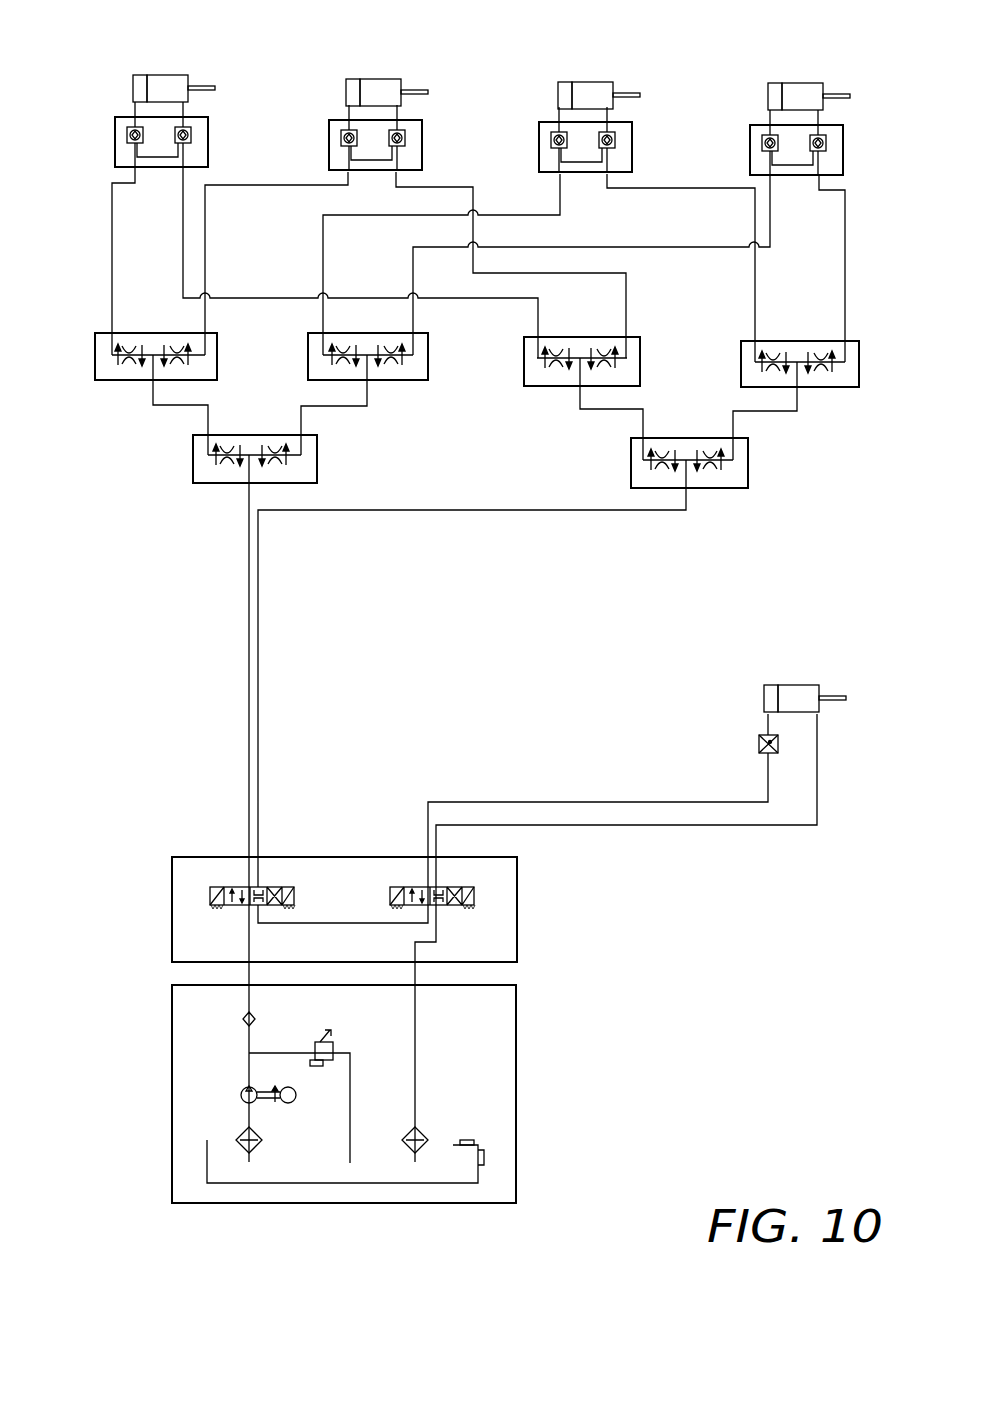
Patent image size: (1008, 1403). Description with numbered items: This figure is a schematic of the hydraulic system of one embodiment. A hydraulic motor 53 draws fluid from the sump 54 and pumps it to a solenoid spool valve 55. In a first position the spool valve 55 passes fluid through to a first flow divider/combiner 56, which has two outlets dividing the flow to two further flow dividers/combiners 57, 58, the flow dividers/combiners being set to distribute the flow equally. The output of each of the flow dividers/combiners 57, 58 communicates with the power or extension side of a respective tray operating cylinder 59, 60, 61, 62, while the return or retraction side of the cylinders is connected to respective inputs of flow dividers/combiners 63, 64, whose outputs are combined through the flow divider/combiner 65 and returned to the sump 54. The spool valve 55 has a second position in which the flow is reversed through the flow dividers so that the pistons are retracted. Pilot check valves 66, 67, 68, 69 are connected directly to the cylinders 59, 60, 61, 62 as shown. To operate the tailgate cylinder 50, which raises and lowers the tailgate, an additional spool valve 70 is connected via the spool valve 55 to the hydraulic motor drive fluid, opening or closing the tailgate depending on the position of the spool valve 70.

The tailgate cylinder 50 is at (790, 685).
The hydraulic motor 53 is at (293, 1107).
The sump 54 is at (407, 1175).
The solenoid spool valve 55 is at (223, 887).
The first flow divider/combiner 56 is at (203, 487).
The flow divider/combiner 57 is at (112, 385).
The flow divider/combiner 58 is at (390, 383).
The tray operating cylinder 59 is at (147, 75).
The tray operating cylinder 60 is at (367, 79).
The tray operating cylinder 61 is at (580, 82).
The tray operating cylinder 62 is at (790, 83).
The flow divider/combiner 63 is at (643, 352).
The flow divider/combiner 64 is at (860, 351).
The flow divider/combiner 65 is at (752, 465).
The pilot check valve 66 is at (115, 140).
The pilot check valve 67 is at (329, 148).
The pilot check valve 68 is at (633, 148).
The pilot check valve 69 is at (845, 150).
The spool valve 70 is at (478, 898).